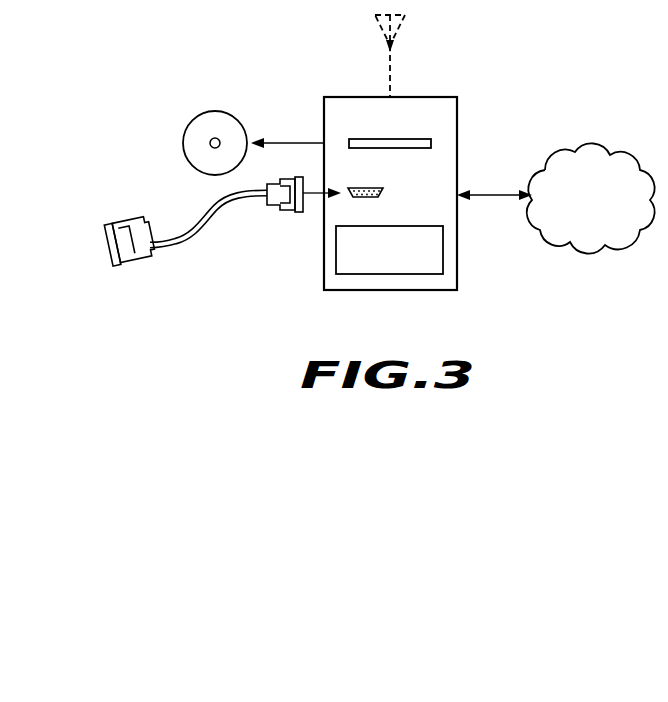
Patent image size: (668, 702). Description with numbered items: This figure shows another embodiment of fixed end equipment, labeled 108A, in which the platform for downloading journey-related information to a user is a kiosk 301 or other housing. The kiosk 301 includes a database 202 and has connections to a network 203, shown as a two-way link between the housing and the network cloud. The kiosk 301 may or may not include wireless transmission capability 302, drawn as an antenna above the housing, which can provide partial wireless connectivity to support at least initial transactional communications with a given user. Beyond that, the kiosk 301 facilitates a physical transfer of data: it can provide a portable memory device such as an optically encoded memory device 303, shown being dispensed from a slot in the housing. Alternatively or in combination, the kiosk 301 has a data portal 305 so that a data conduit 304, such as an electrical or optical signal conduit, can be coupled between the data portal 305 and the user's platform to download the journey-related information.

The kiosk device 108A is at (416, 218).
The kiosk 301 is at (457, 122).
The wireless transmission capability 302 is at (390, 69).
The optically encoded memory device 303 is at (185, 150).
The data conduit 304 is at (185, 252).
The data portal 305 is at (383, 195).
The database 202 is at (443, 250).
The network 203 is at (597, 148).